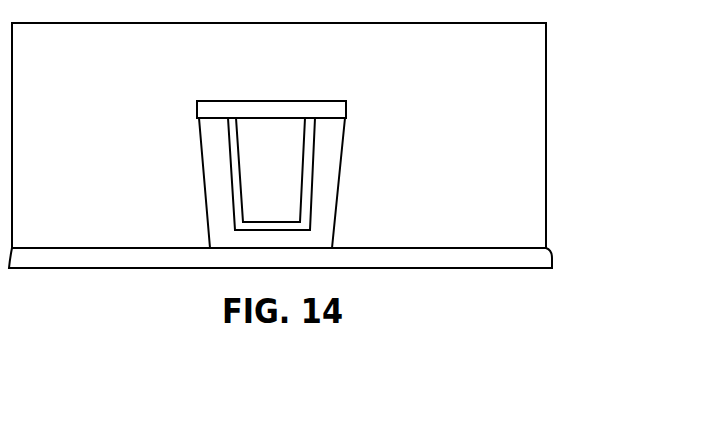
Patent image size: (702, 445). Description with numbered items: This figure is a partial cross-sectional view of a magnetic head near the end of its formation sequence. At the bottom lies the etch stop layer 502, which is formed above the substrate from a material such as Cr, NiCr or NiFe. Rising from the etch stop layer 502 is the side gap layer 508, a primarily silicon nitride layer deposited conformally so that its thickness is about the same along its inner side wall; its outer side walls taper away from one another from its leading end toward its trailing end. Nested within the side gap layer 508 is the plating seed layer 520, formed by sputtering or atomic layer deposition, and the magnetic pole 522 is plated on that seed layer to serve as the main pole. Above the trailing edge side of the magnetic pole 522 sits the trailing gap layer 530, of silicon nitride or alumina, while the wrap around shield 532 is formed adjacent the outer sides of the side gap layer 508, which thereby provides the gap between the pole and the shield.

The etch stop layer 502 is at (538, 256).
The wrap around shield 532 is at (540, 158).
The side gap layer 508 is at (323, 208).
The plating seed layer 520 is at (312, 130).
The magnetic pole 522 is at (260, 130).
The trailing gap layer 530 is at (250, 83).